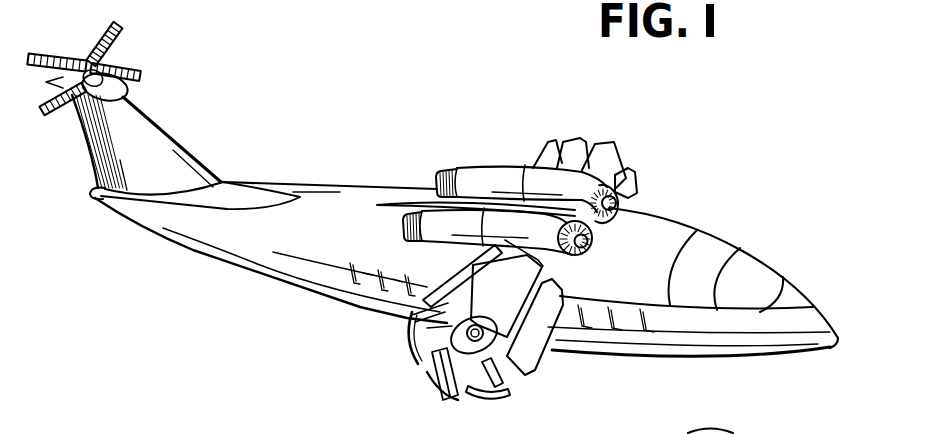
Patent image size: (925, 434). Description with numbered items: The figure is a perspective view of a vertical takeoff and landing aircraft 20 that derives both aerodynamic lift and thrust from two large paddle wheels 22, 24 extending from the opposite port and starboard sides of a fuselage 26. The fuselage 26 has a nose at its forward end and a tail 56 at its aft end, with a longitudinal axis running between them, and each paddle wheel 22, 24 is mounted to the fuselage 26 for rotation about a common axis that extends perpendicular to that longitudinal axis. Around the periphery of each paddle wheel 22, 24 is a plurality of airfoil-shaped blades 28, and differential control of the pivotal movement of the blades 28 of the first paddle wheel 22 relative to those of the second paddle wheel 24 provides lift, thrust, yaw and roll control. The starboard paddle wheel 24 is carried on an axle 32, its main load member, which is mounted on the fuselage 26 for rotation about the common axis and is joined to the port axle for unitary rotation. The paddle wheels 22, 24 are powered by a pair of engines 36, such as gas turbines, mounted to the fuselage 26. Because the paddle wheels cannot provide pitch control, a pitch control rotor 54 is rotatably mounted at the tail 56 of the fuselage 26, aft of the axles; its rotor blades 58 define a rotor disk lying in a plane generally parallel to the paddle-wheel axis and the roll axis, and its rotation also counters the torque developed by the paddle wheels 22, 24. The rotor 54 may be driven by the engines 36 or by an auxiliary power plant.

The vertical takeoff and landing aircraft 20 is at (537, 153).
The paddle wheel 22 is at (566, 156).
The paddle wheel 24 is at (423, 320).
The fuselage 26 is at (337, 204).
The airfoil-shaped blades 28 is at (635, 174).
The axle 32 is at (450, 340).
The engines 36 is at (527, 158).
The pitch control rotor 54 is at (131, 58).
The tail 56 is at (147, 140).
The rotor blades 58 is at (120, 70).